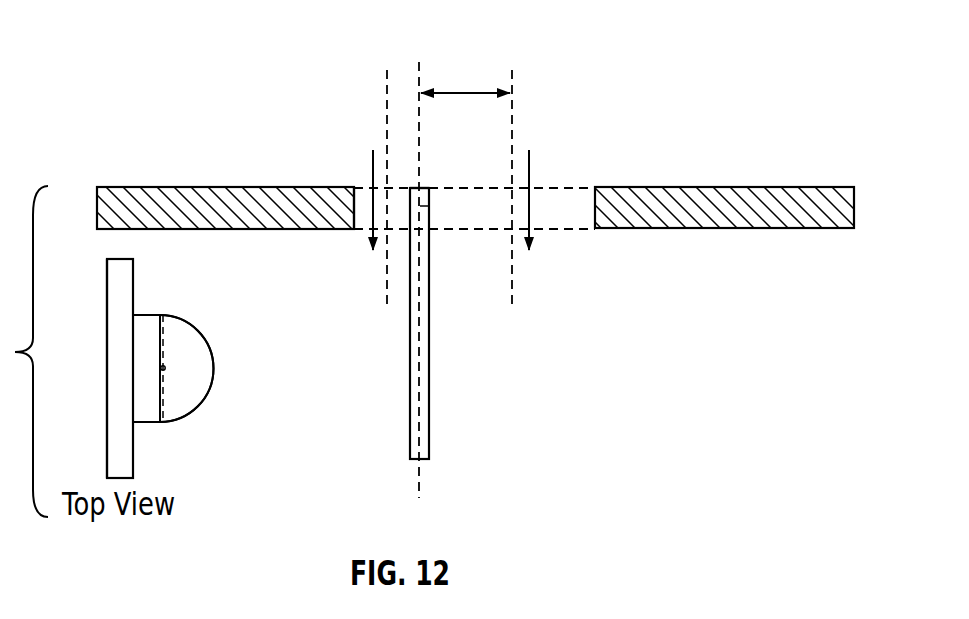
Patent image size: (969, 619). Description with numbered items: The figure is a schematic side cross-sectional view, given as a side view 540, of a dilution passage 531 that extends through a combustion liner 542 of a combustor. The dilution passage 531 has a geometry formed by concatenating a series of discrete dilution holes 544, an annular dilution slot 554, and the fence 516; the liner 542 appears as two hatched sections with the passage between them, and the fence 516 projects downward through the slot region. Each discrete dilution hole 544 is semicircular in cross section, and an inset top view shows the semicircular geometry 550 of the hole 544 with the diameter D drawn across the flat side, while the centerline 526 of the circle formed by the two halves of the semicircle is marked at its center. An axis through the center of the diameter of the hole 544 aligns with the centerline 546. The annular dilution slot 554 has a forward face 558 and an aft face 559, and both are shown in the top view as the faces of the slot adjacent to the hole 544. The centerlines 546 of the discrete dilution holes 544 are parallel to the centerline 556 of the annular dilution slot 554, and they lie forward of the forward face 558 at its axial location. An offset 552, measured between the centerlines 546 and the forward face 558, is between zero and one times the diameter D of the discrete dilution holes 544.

The side view 540 is at (712, 96).
The combustion liner 542 is at (205, 187).
The discrete dilution hole 544 is at (576, 184).
The fence 516 is at (430, 375).
The annular dilution slot 554 is at (407, 185).
The forward face 558 is at (428, 206).
The aft face 559 is at (353, 222).
The dilution passage 531 is at (369, 243).
The offset 552 is at (465, 92).
The centerline of the annular dilution slot 556 is at (387, 107).
The centerline 546 is at (512, 278).
The centerline 526 is at (165, 368).
The geometry 550 is at (218, 368).
The diameter D is at (165, 351).